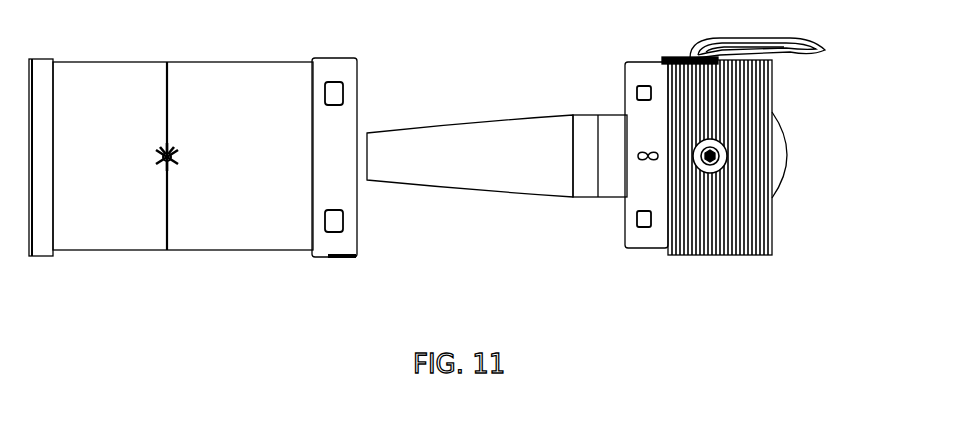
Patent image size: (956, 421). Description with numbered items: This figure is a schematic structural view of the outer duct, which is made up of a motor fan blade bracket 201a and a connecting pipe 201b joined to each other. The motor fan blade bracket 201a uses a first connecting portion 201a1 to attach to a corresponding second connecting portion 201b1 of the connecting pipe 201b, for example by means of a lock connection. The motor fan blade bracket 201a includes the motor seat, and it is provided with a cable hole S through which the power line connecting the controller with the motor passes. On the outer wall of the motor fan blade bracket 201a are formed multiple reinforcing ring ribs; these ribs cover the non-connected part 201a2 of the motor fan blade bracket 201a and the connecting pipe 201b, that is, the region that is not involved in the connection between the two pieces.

The connecting pipe 201b is at (197, 251).
The second connecting portion 201b1 is at (345, 74).
The motor fan blade bracket 201a is at (702, 260).
The first connecting portion 201a1 is at (638, 82).
The non-connected part 201a2 is at (772, 83).
The cable hole S is at (686, 55).